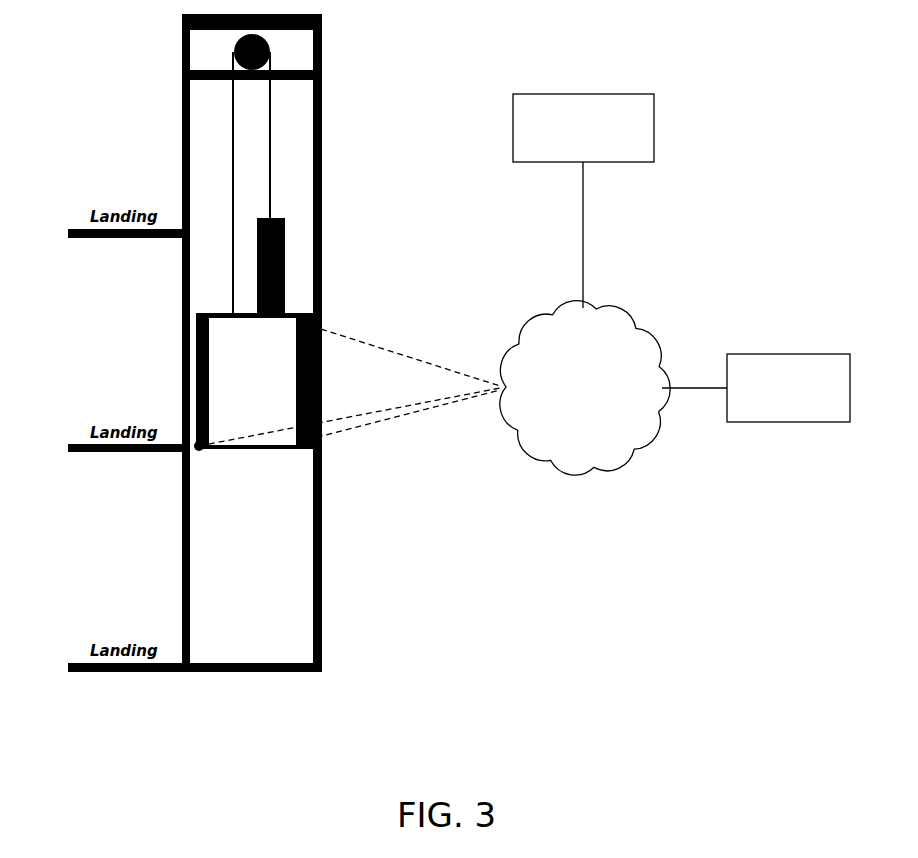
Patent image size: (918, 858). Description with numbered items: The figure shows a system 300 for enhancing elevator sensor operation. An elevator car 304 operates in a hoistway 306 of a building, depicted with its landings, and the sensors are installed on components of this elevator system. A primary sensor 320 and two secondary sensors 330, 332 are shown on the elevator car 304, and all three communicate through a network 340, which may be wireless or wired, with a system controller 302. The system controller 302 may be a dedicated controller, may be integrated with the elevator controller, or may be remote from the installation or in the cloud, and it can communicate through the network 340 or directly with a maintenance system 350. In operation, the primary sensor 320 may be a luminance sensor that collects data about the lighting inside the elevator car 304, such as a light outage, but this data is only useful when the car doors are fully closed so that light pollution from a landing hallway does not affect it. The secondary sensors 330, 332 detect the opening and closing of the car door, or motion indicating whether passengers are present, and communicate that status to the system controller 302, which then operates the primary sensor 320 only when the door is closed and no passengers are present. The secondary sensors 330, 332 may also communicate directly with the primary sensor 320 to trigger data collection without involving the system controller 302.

The system 300 is at (773, 128).
The system controller 302 is at (788, 388).
The elevator car 304 is at (200, 382).
The hoistway 306 is at (300, 128).
The primary sensor 320 is at (200, 450).
The secondary sensor 330 is at (310, 318).
The secondary sensor 332 is at (310, 448).
The network 340 is at (585, 388).
The maintenance system 350 is at (583, 128).